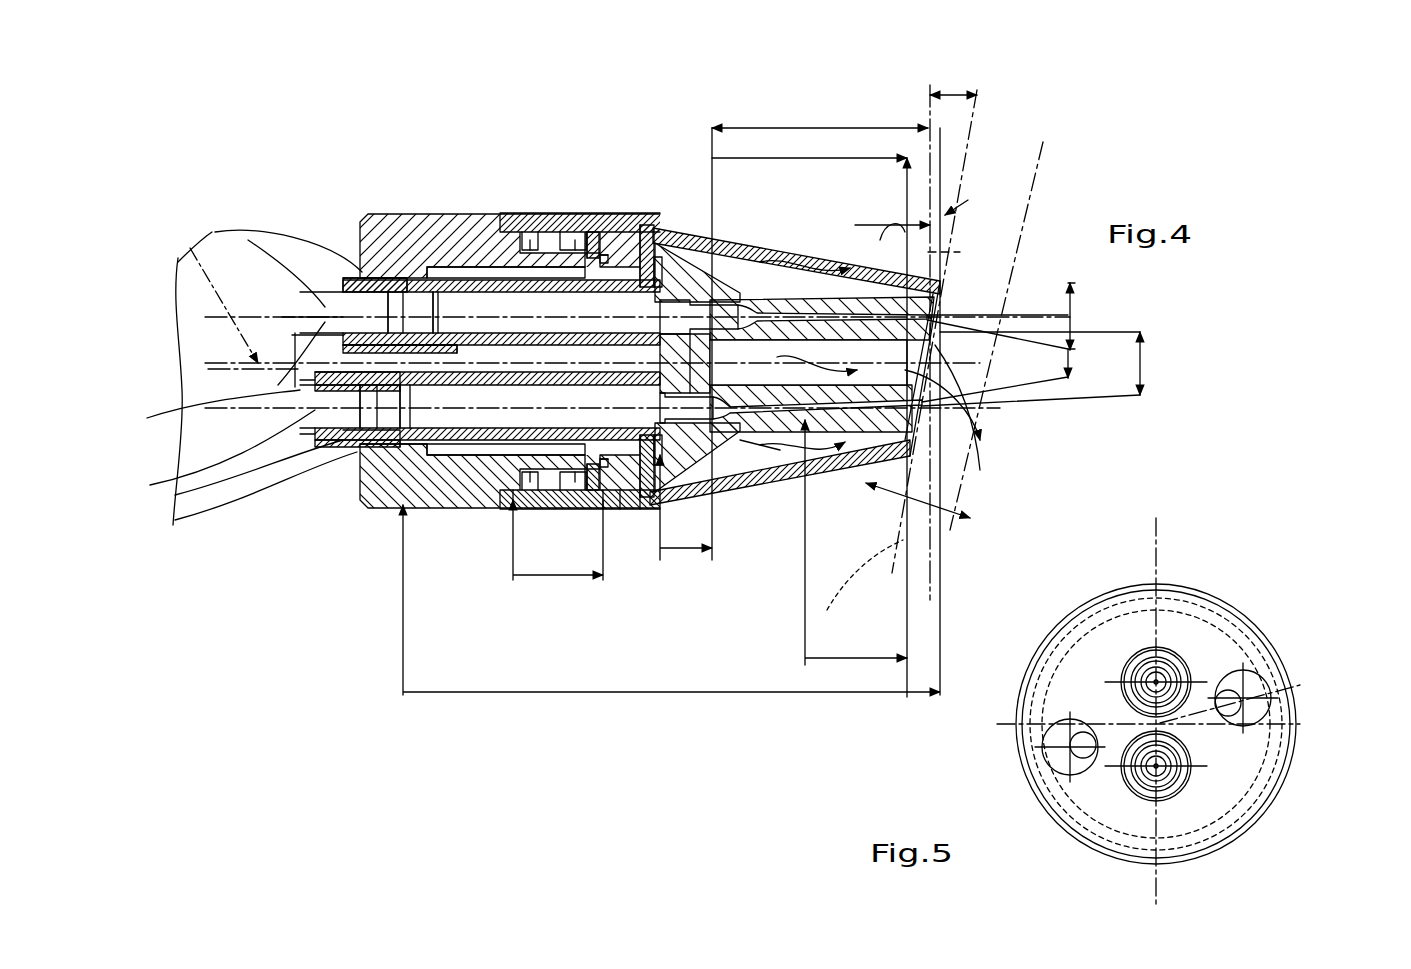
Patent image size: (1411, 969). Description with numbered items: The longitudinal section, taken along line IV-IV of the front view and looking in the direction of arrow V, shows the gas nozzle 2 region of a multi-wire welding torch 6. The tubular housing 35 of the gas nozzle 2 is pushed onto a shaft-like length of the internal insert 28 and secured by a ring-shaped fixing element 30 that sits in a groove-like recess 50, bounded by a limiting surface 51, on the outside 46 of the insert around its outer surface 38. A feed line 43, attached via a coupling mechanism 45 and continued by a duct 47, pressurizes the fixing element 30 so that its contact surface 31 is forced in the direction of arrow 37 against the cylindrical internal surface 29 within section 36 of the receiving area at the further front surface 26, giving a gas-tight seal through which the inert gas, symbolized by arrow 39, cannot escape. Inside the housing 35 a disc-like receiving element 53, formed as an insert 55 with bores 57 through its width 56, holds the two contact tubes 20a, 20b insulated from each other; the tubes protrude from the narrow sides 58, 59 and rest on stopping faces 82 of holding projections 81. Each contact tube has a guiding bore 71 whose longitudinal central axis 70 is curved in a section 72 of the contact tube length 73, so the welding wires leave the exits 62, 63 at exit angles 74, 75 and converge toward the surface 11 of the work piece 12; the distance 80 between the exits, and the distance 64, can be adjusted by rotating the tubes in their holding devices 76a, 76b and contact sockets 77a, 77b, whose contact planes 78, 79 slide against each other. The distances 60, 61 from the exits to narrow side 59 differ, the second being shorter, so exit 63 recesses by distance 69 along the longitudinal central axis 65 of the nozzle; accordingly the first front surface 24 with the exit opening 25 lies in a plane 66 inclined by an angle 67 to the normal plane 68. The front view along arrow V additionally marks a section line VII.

In FIG. 4, the gas nozzle 2 is at (970, 281).
In FIG. 5, the gas nozzle 2 is at (1281, 654).
In FIG. 4, the welding torch 6 is at (880, 190).
In FIG. 4, the surface 11 is at (859, 589).
In FIG. 4, the work piece 12 is at (1043, 142).
In FIG. 4, the first contact tube 20a is at (865, 262).
In FIG. 5, the first contact tube 20a is at (1126, 673).
In FIG. 4, the second contact tube 20b is at (825, 430).
In FIG. 5, the second contact tube 20b is at (1194, 778).
In FIG. 4, the first front surface 24 is at (954, 411).
In FIG. 4, the exit opening 25 is at (950, 302).
In FIG. 4, the further front surface 26 is at (355, 465).
In FIG. 5, the further front surface 26 is at (1230, 597).
In FIG. 4, the internal insert 28 is at (365, 232).
In FIG. 5, the internal insert 28 is at (1232, 639).
In FIG. 4, the cylindrical internal surface 29 is at (500, 278).
In FIG. 4, the fixing element 30 is at (620, 220).
In FIG. 5, the fixing element 30 is at (1059, 824).
In FIG. 4, the contact surface 31 is at (600, 232).
In FIG. 5, the contact surface 31 is at (1120, 632).
In FIG. 4, the housing 35 is at (652, 218).
In FIG. 4, the section 36 is at (515, 508).
In FIG. 4, the arrow 37 is at (565, 232).
In FIG. 4, the outer surface 38 is at (625, 505).
In FIG. 5, the outer surface 38 is at (1017, 701).
In FIG. 4, the arrow 39 is at (780, 470).
In FIG. 4, the feed line 43 is at (260, 258).
In FIG. 4, the coupling mechanism 45 is at (325, 410).
In FIG. 4, the outside 46 is at (380, 195).
In FIG. 5, the duct 47 is at (1062, 754).
In FIG. 4, the recess 50 is at (690, 230).
In FIG. 5, the recess 50 is at (1181, 580).
In FIG. 4, the limiting surface 51 is at (600, 215).
In FIG. 5, the limiting surface 51 is at (1145, 605).
In FIG. 4, the receiving element 53 is at (760, 255).
In FIG. 4, the insert 55 is at (730, 250).
In FIG. 4, the width 56 is at (690, 535).
In FIG. 4, the bore 57 is at (730, 262).
In FIG. 4, the narrow side 58 is at (645, 505).
In FIG. 4, the narrow side 59 is at (755, 455).
In FIG. 4, the distance 60 is at (775, 128).
In FIG. 4, the distance 61 is at (812, 158).
In FIG. 4, the exit 62 is at (1068, 378).
In FIG. 4, the exit 63 is at (973, 414).
In FIG. 4, the distance 64 is at (950, 508).
In FIG. 4, the longitudinal central axis 65 is at (200, 265).
In FIG. 4, the plane 66 is at (975, 195).
In FIG. 4, the angle 67 is at (977, 95).
In FIG. 4, the normal plane 68 is at (968, 252).
In FIG. 4, the distance 69 is at (892, 242).
In FIG. 4, the longitudinal central axis 70 is at (470, 285).
In FIG. 4, the guiding bore 71 is at (348, 285).
In FIG. 4, the section 72 is at (850, 655).
In FIG. 4, the contact tube length 73 is at (780, 690).
In FIG. 4, the exit angle 74 is at (1140, 332).
In FIG. 4, the exit angle 75 is at (1000, 395).
In FIG. 4, the holding device 76a is at (300, 275).
In FIG. 4, the holding device 76b is at (325, 450).
In FIG. 4, the contact socket 77a is at (212, 380).
In FIG. 5, the contact socket 77a is at (1134, 643).
In FIG. 4, the contact socket 77b is at (210, 455).
In FIG. 5, the contact socket 77b is at (1198, 807).
In FIG. 4, the contact planes 78 is at (418, 460).
In FIG. 4, the contact planes 79 is at (455, 462).
In FIG. 4, the distance 80 is at (1142, 365).
In FIG. 4, the holding projections 81 is at (671, 411).
In FIG. 4, the stopping face 82 is at (558, 570).
In FIG. 5, the section line IV- IV is at (1157, 529).
In FIG. 4, the arrow V is at (208, 369).
In FIG. 5, the section VII is at (1340, 676).